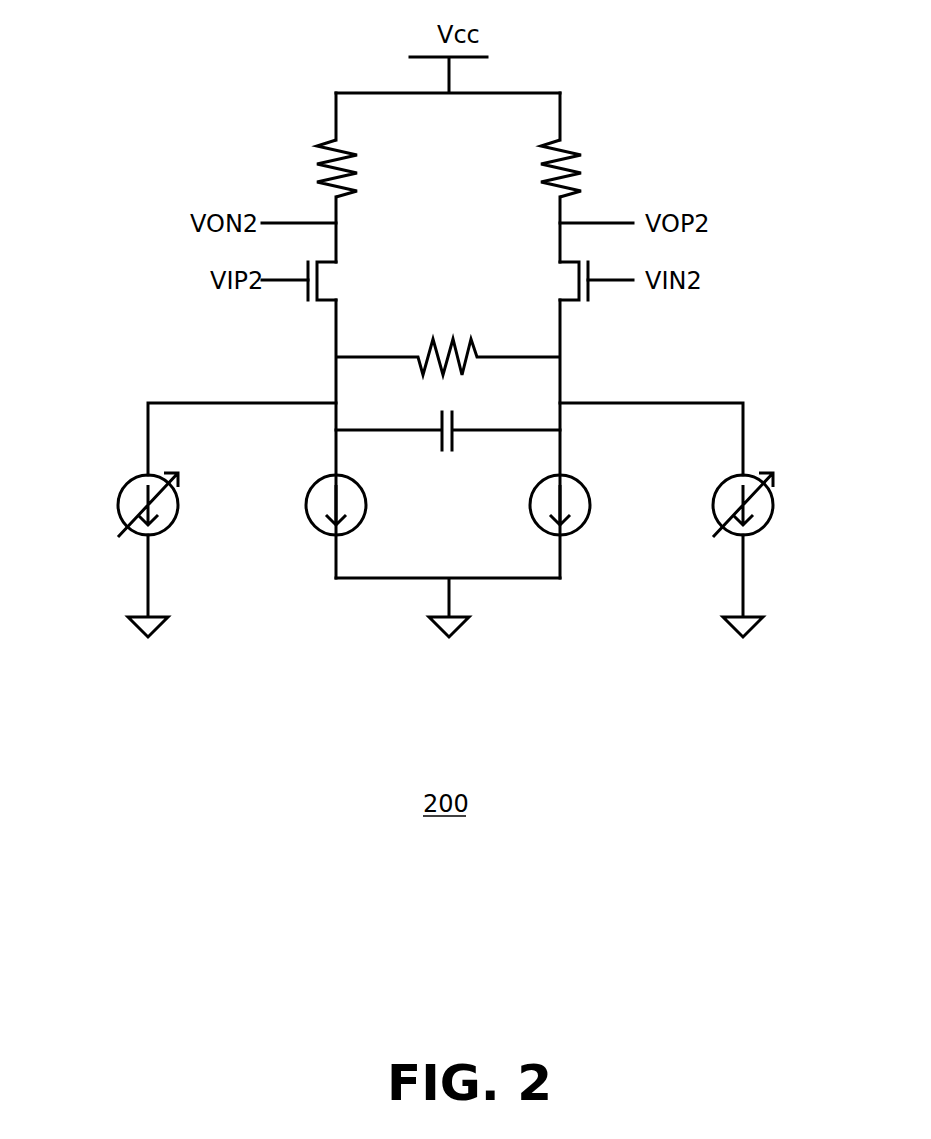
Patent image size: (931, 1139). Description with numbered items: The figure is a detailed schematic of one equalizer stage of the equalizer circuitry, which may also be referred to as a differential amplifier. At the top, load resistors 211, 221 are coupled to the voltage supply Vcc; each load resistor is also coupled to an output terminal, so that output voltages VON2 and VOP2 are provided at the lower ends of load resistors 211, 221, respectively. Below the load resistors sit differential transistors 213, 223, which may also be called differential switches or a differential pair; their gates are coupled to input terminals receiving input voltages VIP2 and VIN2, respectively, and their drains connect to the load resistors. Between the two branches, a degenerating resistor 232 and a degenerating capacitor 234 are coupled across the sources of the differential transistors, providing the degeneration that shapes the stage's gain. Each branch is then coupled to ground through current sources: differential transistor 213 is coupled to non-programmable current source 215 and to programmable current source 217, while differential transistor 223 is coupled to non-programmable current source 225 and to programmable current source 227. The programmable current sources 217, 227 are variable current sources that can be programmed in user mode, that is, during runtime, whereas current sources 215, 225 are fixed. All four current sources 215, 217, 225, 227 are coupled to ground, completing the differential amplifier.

The load resistor 211 is at (316, 164).
The load resistor 221 is at (581, 173).
The differential transistor 213 is at (318, 303).
The differential transistor 223 is at (579, 303).
The degenerating resistor 232 is at (451, 337).
The degenerating capacitor 234 is at (439, 441).
The non-programmable current source 215 is at (305, 518).
The non-programmable current source 225 is at (586, 522).
The programmable current source 217 is at (117, 513).
The programmable current source 227 is at (772, 518).